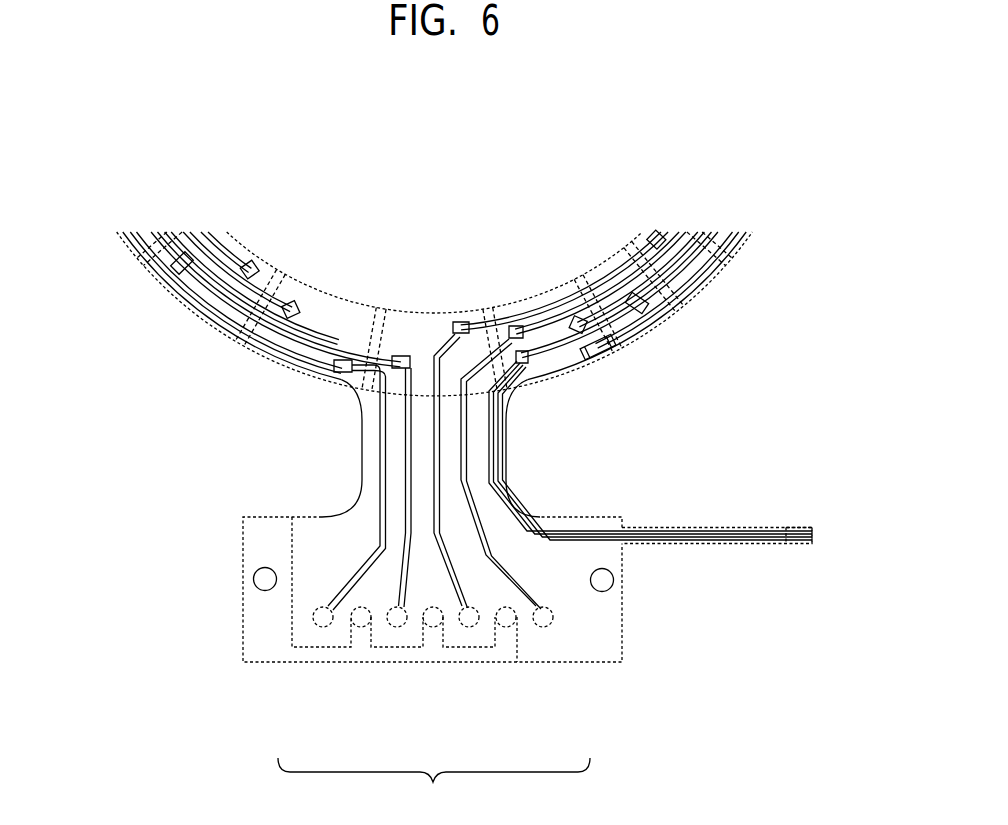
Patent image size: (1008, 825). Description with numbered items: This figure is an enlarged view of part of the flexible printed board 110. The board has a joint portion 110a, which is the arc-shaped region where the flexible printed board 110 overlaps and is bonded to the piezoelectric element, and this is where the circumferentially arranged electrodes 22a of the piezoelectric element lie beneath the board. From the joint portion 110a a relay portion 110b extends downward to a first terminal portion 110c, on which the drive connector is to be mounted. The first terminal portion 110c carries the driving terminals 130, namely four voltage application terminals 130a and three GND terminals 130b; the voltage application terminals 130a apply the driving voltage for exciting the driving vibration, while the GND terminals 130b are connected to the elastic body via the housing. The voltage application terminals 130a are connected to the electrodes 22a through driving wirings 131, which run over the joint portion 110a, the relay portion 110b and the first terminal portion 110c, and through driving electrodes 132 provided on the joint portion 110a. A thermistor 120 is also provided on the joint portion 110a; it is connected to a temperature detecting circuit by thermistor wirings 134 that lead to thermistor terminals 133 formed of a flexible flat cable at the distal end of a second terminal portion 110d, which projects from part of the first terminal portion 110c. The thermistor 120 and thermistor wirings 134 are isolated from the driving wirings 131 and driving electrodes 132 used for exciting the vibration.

The electrodes 22a is at (355, 316).
The flexible printed board 110 is at (438, 406).
The joint portion 110a is at (172, 288).
The relay portion 110b is at (358, 490).
The first terminal portion 110c is at (243, 590).
The second terminal portion 110d is at (700, 546).
The thermistor 120 is at (583, 360).
The driving terminals 130 is at (434, 709).
The voltage application terminals 130a is at (321, 622).
The GND terminals 130b is at (361, 617).
The driving wirings 131 is at (462, 494).
The driving electrodes 132 is at (333, 381).
The thermistor terminals 133 is at (813, 536).
The thermistor wirings 134 is at (496, 431).